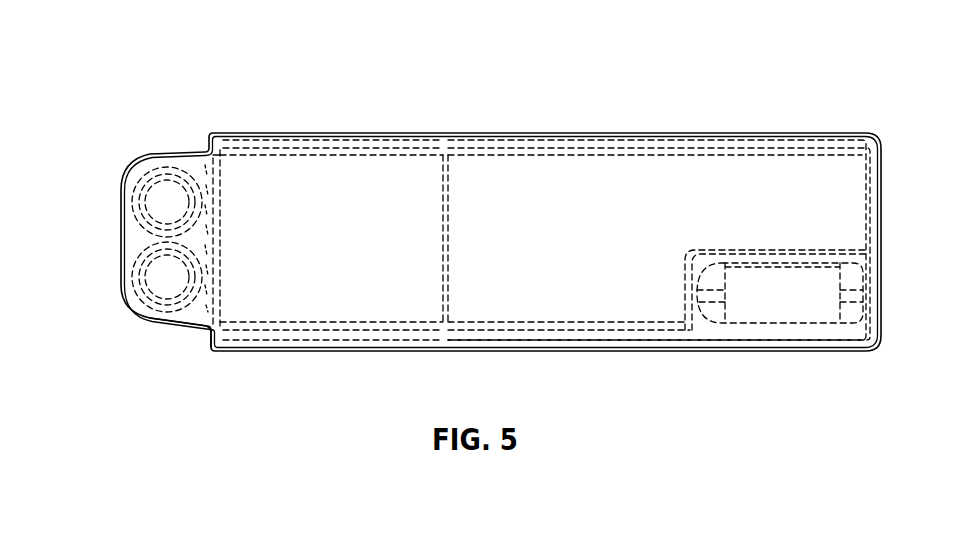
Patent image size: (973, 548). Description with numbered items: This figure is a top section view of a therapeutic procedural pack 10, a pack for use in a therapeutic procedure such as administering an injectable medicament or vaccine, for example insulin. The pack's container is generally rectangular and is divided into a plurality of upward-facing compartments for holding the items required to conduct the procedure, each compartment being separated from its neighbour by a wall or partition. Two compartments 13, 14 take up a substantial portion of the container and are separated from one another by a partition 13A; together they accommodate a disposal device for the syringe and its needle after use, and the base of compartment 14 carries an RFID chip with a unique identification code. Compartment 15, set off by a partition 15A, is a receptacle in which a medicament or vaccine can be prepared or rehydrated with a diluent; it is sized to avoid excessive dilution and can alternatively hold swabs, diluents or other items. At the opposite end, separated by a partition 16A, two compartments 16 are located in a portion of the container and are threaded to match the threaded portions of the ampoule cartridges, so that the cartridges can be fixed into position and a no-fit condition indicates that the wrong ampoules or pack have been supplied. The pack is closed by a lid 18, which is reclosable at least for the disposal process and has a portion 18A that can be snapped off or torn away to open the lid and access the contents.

The therapeutic procedural pack 10 is at (558, 133).
The compartment 13 is at (348, 242).
The partition 13A is at (448, 268).
The compartment 14 is at (548, 244).
The compartment 15 is at (769, 311).
The partition 15A is at (822, 253).
The compartments 16 is at (158, 172).
The partition 16A is at (217, 197).
The lid 18 is at (883, 185).
The lid portion 18A is at (196, 325).